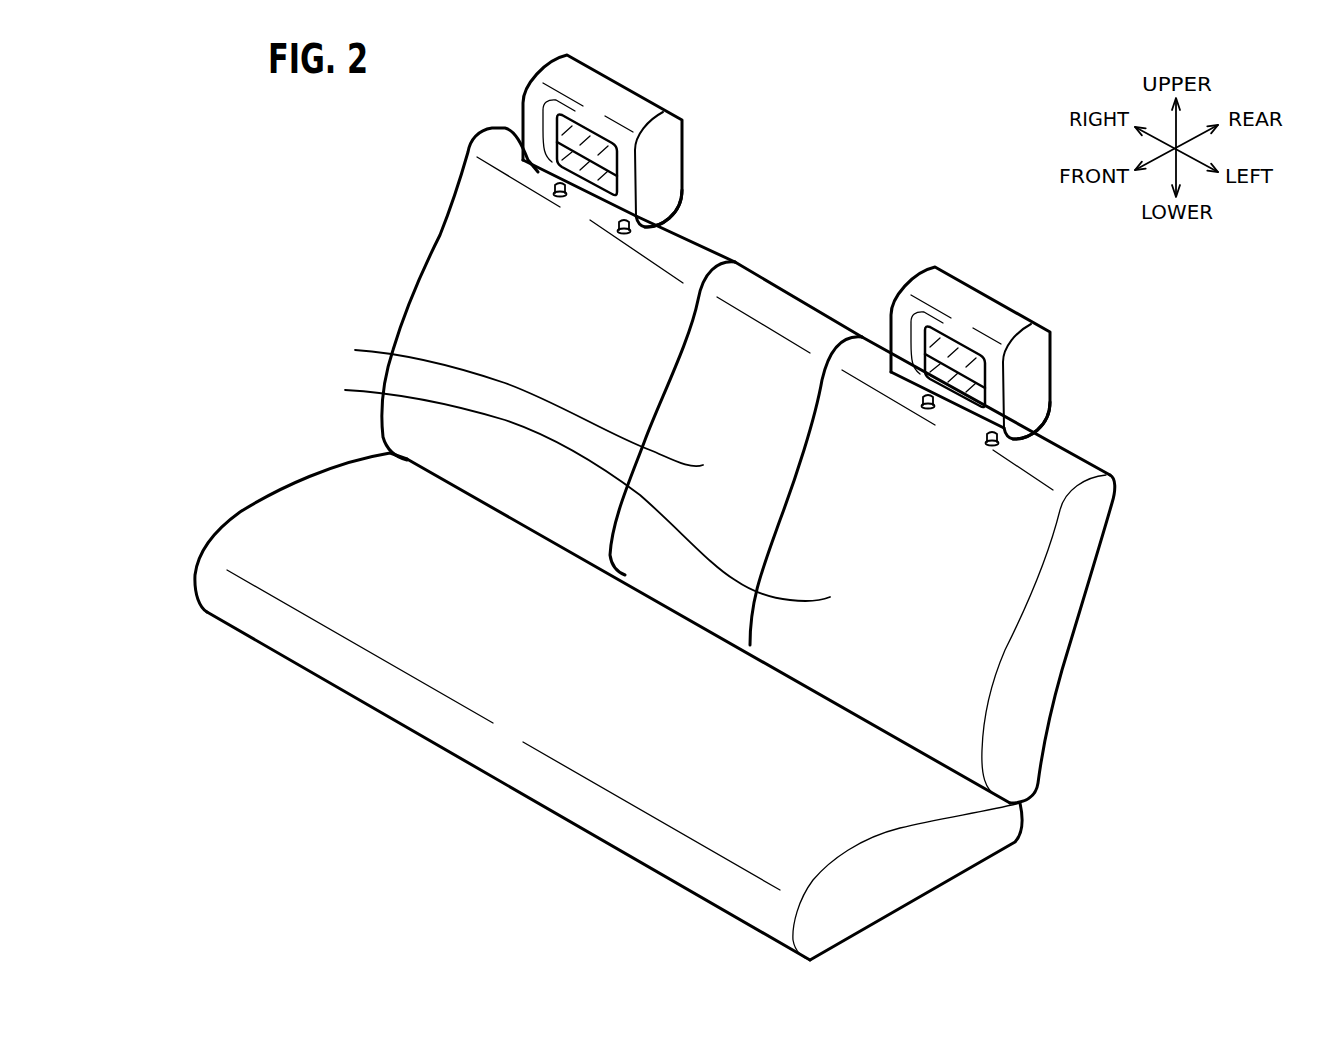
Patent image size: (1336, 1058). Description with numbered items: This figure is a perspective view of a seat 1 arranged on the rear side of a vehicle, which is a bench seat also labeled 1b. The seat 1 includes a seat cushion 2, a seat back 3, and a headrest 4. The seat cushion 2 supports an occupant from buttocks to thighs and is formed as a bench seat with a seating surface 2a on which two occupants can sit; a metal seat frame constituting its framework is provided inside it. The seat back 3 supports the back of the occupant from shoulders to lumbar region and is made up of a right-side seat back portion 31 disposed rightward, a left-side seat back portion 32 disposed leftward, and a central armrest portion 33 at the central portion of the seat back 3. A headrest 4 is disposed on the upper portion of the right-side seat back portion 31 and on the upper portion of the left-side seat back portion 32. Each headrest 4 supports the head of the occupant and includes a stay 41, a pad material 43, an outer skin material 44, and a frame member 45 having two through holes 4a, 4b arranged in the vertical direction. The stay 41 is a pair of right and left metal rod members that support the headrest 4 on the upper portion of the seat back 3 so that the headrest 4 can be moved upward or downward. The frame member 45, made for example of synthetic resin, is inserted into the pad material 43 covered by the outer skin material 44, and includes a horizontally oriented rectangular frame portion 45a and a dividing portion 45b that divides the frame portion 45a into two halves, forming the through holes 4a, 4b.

The seat 1 is at (853, 213).
The rear seat 1b is at (1048, 639).
The seat cushion 2 is at (385, 740).
The seating surface 2a is at (553, 702).
The seat back 3 is at (343, 283).
The right-side seat back portion 31 is at (460, 320).
The left-side seat back portion 32 is at (570, 490).
The central armrest portion 33 is at (513, 403).
The headrest 4 is at (660, 87).
The through hole 4a is at (556, 128).
The through hole 4b is at (556, 166).
The stay 41 is at (555, 184).
The pad material 43 is at (663, 159).
The outer skin material 44 is at (686, 196).
The frame member 45 is at (612, 302).
The frame portion 45a is at (600, 165).
The dividing portion 45b is at (597, 160).